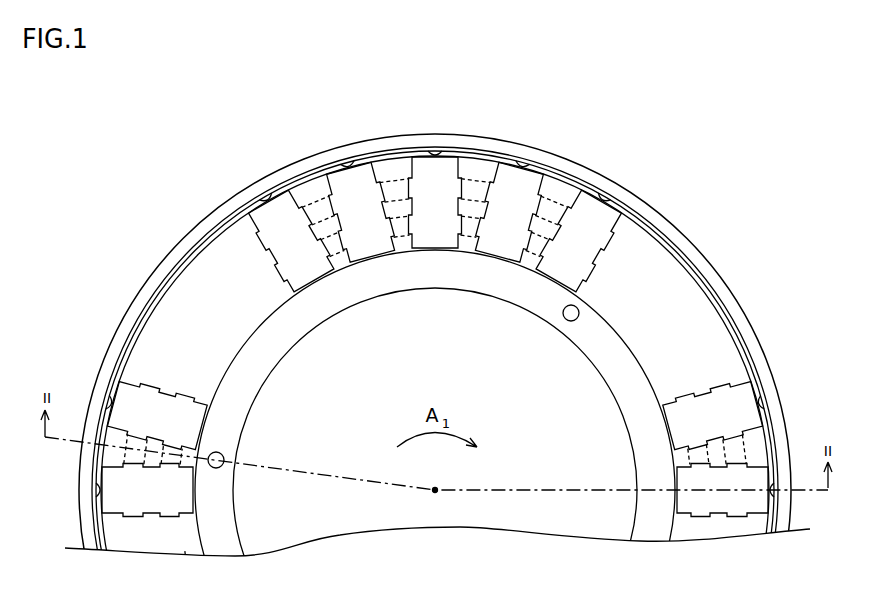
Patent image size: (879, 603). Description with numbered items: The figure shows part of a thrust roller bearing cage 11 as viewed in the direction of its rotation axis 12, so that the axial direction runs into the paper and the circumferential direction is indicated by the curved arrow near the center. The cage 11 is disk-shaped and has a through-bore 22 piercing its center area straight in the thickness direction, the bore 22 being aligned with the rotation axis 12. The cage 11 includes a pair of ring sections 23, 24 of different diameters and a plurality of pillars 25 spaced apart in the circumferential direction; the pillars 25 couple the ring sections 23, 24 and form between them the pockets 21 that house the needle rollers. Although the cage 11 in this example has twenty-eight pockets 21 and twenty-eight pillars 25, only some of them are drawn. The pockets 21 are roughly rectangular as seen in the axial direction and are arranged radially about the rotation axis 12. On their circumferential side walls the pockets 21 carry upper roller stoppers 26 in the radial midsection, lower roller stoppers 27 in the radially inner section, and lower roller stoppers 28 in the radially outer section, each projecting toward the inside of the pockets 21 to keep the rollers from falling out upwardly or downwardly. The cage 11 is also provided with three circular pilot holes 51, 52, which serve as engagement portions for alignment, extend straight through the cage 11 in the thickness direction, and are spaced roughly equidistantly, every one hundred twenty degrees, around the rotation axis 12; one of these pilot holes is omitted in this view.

The thrust roller bearing cage 11 is at (666, 127).
The rotation axis 12 is at (435, 505).
The pockets 21 is at (287, 207).
The through-bore 22 is at (340, 515).
The ring section 23 is at (222, 538).
The ring section 24 is at (92, 532).
The pillars 25 is at (112, 457).
The upper roller stoppers 26 is at (735, 420).
The lower roller stoppers 27 is at (688, 457).
The lower roller stoppers 28 is at (762, 455).
The pilot hole 51 is at (215, 469).
The pilot hole 52 is at (578, 308).